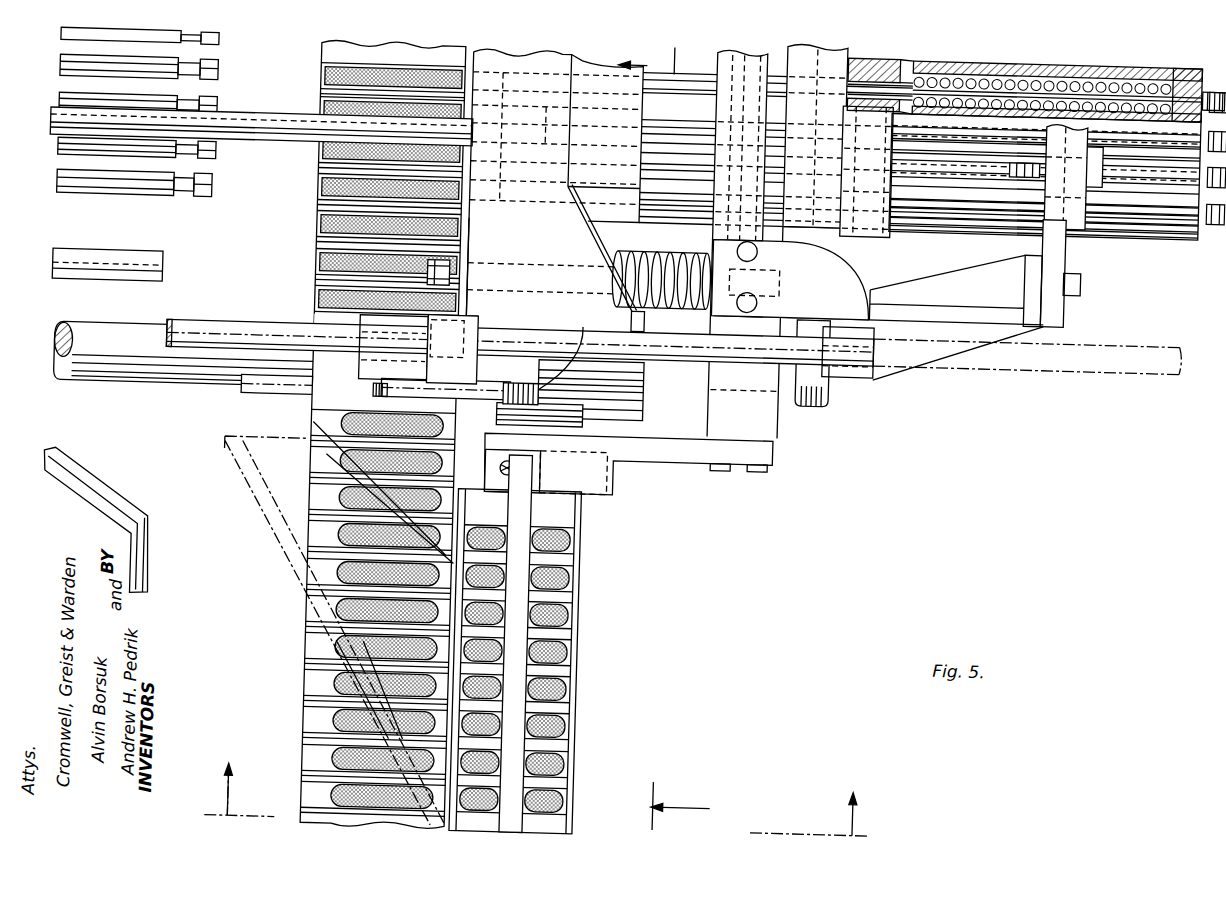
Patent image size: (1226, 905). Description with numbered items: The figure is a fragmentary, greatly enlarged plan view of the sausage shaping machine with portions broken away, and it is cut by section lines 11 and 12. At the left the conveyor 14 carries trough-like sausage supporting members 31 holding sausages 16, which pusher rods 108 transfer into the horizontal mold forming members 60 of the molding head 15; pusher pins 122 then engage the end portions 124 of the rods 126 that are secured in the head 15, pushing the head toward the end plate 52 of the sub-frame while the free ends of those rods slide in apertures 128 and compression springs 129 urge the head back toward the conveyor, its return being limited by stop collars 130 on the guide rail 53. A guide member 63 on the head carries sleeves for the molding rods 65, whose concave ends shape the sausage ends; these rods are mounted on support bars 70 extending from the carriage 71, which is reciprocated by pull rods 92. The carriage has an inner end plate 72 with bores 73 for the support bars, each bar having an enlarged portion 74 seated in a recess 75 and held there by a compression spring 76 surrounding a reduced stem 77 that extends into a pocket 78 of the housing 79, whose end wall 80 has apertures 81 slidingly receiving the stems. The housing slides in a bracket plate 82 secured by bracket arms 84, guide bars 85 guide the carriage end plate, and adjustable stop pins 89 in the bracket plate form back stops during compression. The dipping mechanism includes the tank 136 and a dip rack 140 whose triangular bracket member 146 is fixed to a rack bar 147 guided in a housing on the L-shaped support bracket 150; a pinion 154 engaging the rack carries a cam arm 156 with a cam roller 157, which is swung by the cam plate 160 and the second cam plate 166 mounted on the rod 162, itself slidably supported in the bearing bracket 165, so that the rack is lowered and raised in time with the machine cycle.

The section line 11- 11 is at (552, 629).
The section line 12- 12 is at (680, 435).
The conveyor 14 is at (359, 434).
The molding head 15 is at (520, 249).
The sausages 16 is at (338, 172).
The sausage supporting members 31 is at (329, 283).
The end plate 52 is at (713, 61).
The guide rail 53 is at (92, 401).
The mold forming members 60 is at (490, 92).
The guide member 63 is at (603, 183).
The molding rods 65 is at (667, 158).
The support bars 70 is at (790, 115).
The carriage 71 is at (946, 213).
The inner end plate 72 is at (884, 222).
The bores 73 is at (829, 91).
The enlarged portion 74 is at (915, 55).
The recess 75 is at (836, 86).
The compression spring 76 is at (975, 58).
The stem 77 is at (1048, 60).
The pocket 78 is at (1010, 58).
The housing 79 is at (1146, 218).
The end wall 80 is at (1193, 62).
The apertures 81 is at (1150, 68).
The bracket plate 82 is at (1067, 237).
The bracket arms 84 is at (1040, 306).
The guide bars 85 is at (800, 205).
The stop pins 89 is at (1006, 166).
The pull rods 92 is at (262, 145).
The pusher rods 108 is at (214, 84).
The pusher pins 122 is at (118, 277).
The end portions 124 is at (443, 275).
The rods 126 is at (668, 298).
The apertures 128 is at (754, 282).
The compression spring 129 is at (646, 255).
The stop collars 130 is at (480, 325).
The tank 136 is at (554, 662).
The dip rack 140 is at (583, 624).
The bracket member 146 is at (530, 506).
The rack bar 147 is at (507, 469).
The support bracket 150 is at (692, 458).
The pinion 154 is at (616, 477).
The cam arm 156 is at (642, 412).
The cam roller 157 is at (569, 349).
The cam plate 160 is at (249, 398).
The rod 162 is at (221, 333).
The bearing bracket 165 is at (790, 324).
The second cam plate 166 is at (506, 396).